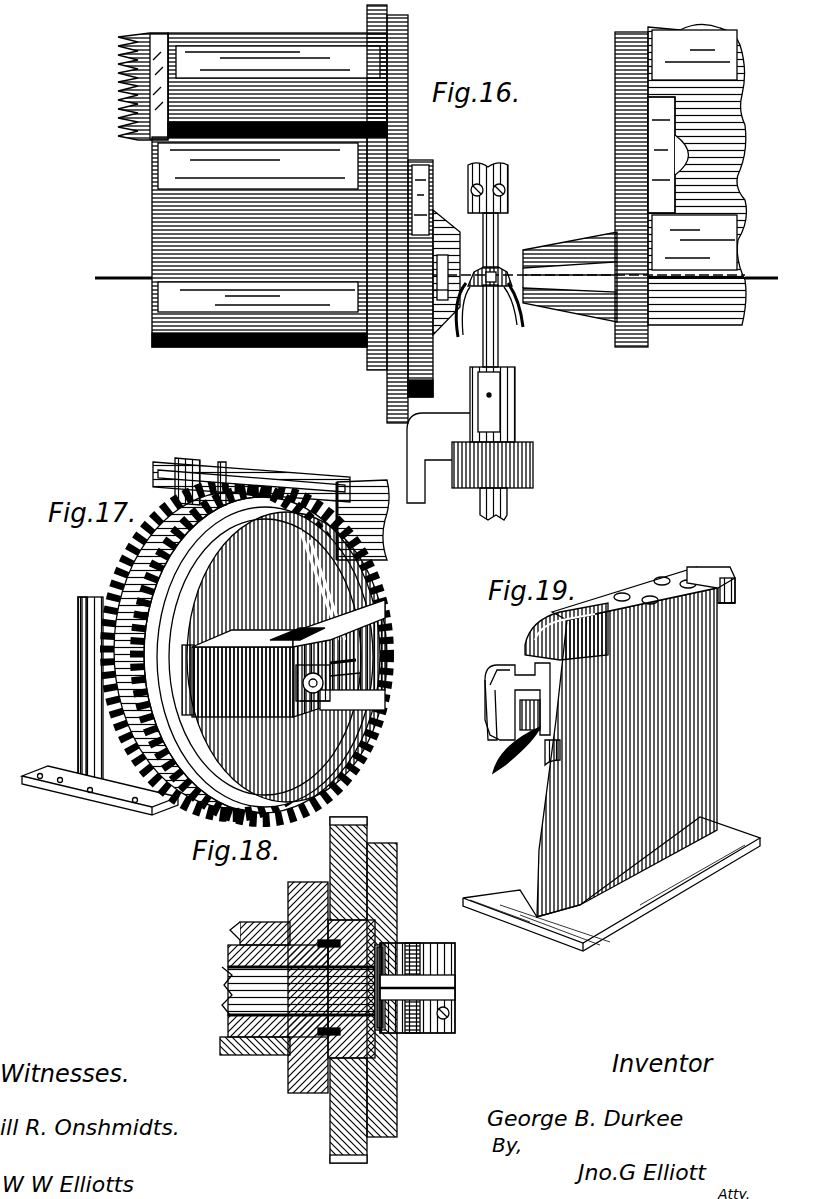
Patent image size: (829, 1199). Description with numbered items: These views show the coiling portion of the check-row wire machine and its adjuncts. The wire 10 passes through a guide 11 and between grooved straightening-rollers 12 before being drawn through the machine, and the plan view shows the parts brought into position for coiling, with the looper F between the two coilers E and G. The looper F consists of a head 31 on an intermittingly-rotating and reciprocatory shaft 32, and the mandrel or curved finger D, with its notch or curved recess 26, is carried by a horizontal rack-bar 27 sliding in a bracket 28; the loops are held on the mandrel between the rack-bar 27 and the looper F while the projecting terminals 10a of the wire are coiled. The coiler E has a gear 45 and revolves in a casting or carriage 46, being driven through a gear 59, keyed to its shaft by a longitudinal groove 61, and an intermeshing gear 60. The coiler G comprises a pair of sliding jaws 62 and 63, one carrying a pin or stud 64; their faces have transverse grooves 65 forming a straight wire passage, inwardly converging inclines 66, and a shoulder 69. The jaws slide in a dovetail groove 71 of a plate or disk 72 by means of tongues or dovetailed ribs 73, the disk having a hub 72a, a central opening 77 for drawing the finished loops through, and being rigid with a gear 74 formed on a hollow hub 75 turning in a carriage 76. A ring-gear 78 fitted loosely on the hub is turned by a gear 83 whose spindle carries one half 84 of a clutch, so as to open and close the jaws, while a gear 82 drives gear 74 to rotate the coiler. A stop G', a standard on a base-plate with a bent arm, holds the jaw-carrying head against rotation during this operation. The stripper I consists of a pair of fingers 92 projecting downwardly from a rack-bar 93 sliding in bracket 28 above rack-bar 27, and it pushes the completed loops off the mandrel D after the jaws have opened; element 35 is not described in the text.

In FIG. 16, the wire 10 is at (436, 287).
In FIG. 16, the projecting terminals of the wire 10a is at (523, 318).
In FIG. 16, the guide 11 is at (503, 326).
In FIG. 16, the grooved straightening-rollers 12 is at (570, 264).
In FIG. 19, the notch or curved recess 26 is at (498, 775).
In FIG. 16, the horizontal rack-bar 27 is at (497, 262).
In FIG. 19, the horizontal rack-bar 27 is at (528, 765).
In FIG. 19, the bracket 28 is at (611, 759).
In FIG. 16, the head 31 is at (505, 352).
In FIG. 16, the shaft 32 is at (504, 514).
In FIG. 16, the collar 35 is at (481, 458).
In FIG. 16, the gear 45 is at (631, 199).
In FIG. 16, the casting or carriage 46 is at (697, 174).
In FIG. 16, the gear 59 is at (587, 67).
In FIG. 16, the intermeshing gear 60 is at (591, 155).
In FIG. 17, the longitudinal groove 61 is at (305, 623).
In FIG. 16, the sliding jaw 62 is at (462, 303).
In FIG. 17, the sliding jaw 62 is at (261, 673).
In FIG. 16, the sliding jaw 63 is at (442, 222).
In FIG. 17, the sliding jaw 63 is at (339, 658).
In FIG. 18, the sliding jaw 63 is at (428, 988).
In FIG. 16, the pin or stud 64 is at (457, 348).
In FIG. 17, the pin or stud 64 is at (326, 698).
In FIG. 17, the transverse grooves 65 is at (360, 673).
In FIG. 18, the transverse grooves 65 is at (458, 988).
In FIG. 17, the inclines 66 is at (356, 660).
In FIG. 17, the shoulder 69 is at (330, 668).
In FIG. 17, the dovetail groove 71 is at (265, 657).
In FIG. 18, the dovetail groove 71 is at (395, 1035).
In FIG. 16, the plate or disk 72 is at (428, 269).
In FIG. 17, the plate or disk 72 is at (370, 590).
In FIG. 18, the plate or disk 72 is at (377, 1003).
In FIG. 18, the hub 72a is at (348, 938).
In FIG. 18, the tongue or dovetailed rib 73 is at (385, 950).
In FIG. 16, the gear 74 is at (366, 372).
In FIG. 17, the gear 74 is at (243, 652).
In FIG. 18, the gear 74 is at (295, 987).
In FIG. 17, the hub 75 is at (182, 680).
In FIG. 18, the hub 75 is at (228, 956).
In FIG. 16, the casting or carriage 76 is at (269, 190).
In FIG. 18, the casting or carriage 76 is at (297, 1044).
In FIG. 18, the central opening 77 is at (390, 1050).
In FIG. 16, the ring-gear 78 is at (373, 427).
In FIG. 17, the ring-gear 78 is at (205, 805).
In FIG. 18, the ring-gear 78 is at (352, 818).
In FIG. 16, the gear 82 is at (366, 22).
In FIG. 16, the gear 83 is at (408, 20).
In FIG. 17, the gear 83 is at (271, 509).
In FIG. 16, the clutch half 84 is at (128, 86).
In FIG. 19, the fingers 92 is at (486, 725).
In FIG. 19, the rack-bar 93 is at (728, 562).
In FIG. 16, the mandrel or curved finger D is at (494, 268).
In FIG. 19, the mandrel or curved finger D is at (490, 772).
In FIG. 16, the combined guide and coiler E is at (570, 268).
In FIG. 16, the rotary looper F is at (470, 320).
In FIG. 16, the coiler G is at (454, 264).
In FIG. 17, the stop G' is at (100, 706).
In FIG. 19, the stripper I is at (540, 671).